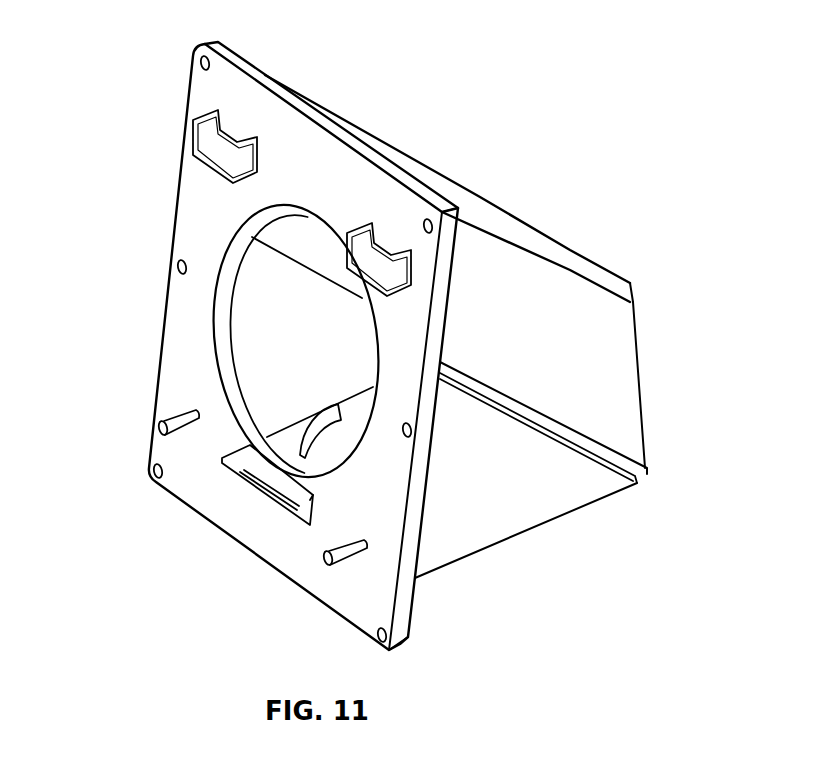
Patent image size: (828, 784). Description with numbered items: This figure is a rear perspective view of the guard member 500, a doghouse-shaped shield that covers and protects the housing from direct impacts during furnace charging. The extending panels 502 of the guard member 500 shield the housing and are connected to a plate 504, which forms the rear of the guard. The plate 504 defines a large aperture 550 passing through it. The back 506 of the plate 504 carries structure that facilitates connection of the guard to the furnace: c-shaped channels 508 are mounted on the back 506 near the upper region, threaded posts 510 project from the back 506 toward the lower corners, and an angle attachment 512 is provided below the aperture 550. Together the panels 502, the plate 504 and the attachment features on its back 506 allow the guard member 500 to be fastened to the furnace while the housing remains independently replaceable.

The guard member 500 is at (526, 186).
The panels 502 is at (545, 507).
The plate 504 is at (320, 167).
The back of the plate 506 is at (187, 243).
The c-shaped channels 508 is at (218, 155).
The threaded posts 510 is at (160, 428).
The angle attachment 512 is at (268, 477).
The aperture 550 is at (332, 359).